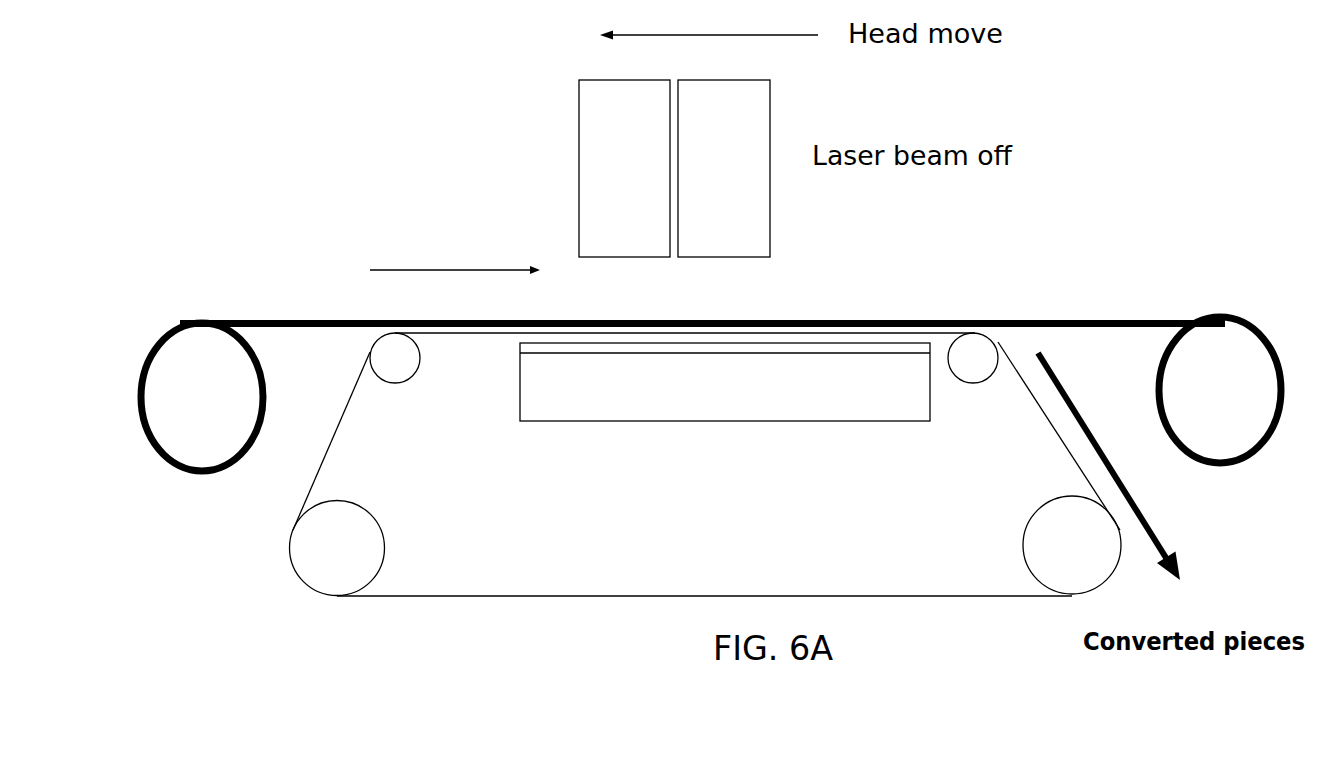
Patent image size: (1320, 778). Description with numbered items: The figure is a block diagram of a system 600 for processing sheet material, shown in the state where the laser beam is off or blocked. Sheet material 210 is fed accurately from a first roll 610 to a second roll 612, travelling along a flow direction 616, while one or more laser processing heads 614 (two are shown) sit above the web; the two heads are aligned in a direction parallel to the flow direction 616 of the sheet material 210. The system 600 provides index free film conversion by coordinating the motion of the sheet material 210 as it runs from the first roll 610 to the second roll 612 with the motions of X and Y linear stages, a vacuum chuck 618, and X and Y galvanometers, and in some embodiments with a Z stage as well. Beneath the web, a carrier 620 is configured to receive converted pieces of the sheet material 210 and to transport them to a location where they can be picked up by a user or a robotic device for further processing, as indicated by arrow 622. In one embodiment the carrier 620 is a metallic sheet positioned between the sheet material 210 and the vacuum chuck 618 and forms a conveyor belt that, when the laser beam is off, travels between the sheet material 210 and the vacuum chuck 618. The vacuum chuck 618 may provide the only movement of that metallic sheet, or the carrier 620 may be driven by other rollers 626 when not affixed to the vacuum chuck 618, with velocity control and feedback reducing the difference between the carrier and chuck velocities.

The system 600 is at (418, 68).
The laser processing head 614 is at (578, 118).
The flow direction 616 is at (428, 270).
The sheet material 210 is at (278, 320).
The first roll 610 is at (180, 472).
The second roll 612 is at (1210, 464).
The vacuum chuck 618 is at (913, 421).
The carrier 620 is at (970, 596).
The arrow 622 is at (1145, 515).
The rollers 626 is at (303, 585).